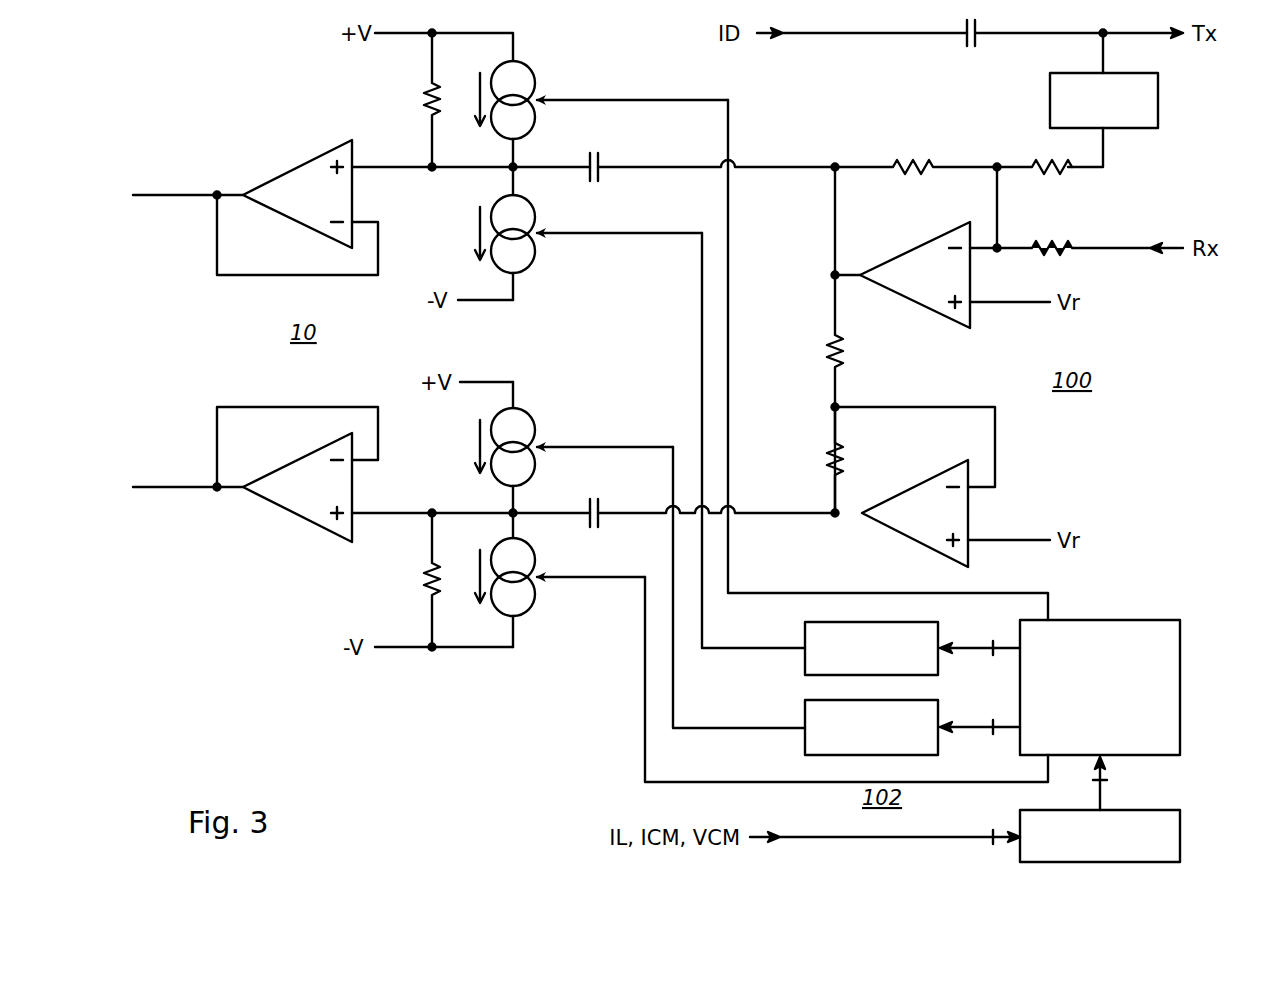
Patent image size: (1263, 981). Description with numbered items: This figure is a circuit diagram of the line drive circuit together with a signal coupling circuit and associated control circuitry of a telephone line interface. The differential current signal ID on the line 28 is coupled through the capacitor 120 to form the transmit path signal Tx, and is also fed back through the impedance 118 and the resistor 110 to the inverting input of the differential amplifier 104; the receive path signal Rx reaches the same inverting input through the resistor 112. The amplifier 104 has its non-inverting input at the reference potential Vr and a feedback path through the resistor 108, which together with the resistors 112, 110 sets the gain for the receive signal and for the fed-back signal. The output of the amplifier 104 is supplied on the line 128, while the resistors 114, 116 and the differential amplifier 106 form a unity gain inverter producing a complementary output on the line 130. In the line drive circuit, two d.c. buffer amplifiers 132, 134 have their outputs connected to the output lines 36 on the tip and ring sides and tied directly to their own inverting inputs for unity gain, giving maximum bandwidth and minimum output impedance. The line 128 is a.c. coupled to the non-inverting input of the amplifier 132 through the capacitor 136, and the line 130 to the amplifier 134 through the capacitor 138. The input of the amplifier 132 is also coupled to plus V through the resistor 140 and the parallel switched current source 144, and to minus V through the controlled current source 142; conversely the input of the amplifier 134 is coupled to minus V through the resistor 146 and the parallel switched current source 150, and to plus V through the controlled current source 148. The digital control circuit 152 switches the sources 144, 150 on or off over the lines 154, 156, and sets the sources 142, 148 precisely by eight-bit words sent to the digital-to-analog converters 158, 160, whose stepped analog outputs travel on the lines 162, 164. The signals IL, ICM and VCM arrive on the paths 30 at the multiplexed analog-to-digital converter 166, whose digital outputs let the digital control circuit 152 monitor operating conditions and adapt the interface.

The line 28 is at (845, 44).
The paths 30 is at (830, 835).
The output lines 36 is at (148, 195).
The differential amplifier 104 is at (910, 258).
The differential amplifier 106 is at (908, 500).
The resistor 108 is at (910, 157).
The resistor 110 is at (1030, 158).
The resistor 112 is at (1052, 243).
The resistor 114 is at (845, 348).
The resistor 116 is at (845, 462).
The impedance 118 is at (1135, 128).
The capacitor 120 is at (958, 42).
The line 128 is at (755, 178).
The line 130 is at (768, 522).
The d.c. buffer amplifier 132 is at (300, 163).
The d.c. buffer amplifier 134 is at (300, 545).
The capacitor 136 is at (598, 162).
The capacitor 138 is at (598, 508).
The resistor 140 is at (420, 100).
The controlled current source 142 is at (540, 248).
The switched current source 144 is at (535, 95).
The resistor 146 is at (420, 600).
The controlled current source 148 is at (535, 441).
The switched current source 150 is at (540, 595).
The digital control circuit 152 is at (1130, 632).
The line 154 is at (728, 305).
The line 156 is at (643, 707).
The digital-to-analog converter 158 is at (805, 664).
The digital-to-analog converter 160 is at (808, 715).
The line 162 is at (700, 305).
The line 164 is at (666, 445).
The multiplexed analog-to-digital converter 166 is at (1128, 817).